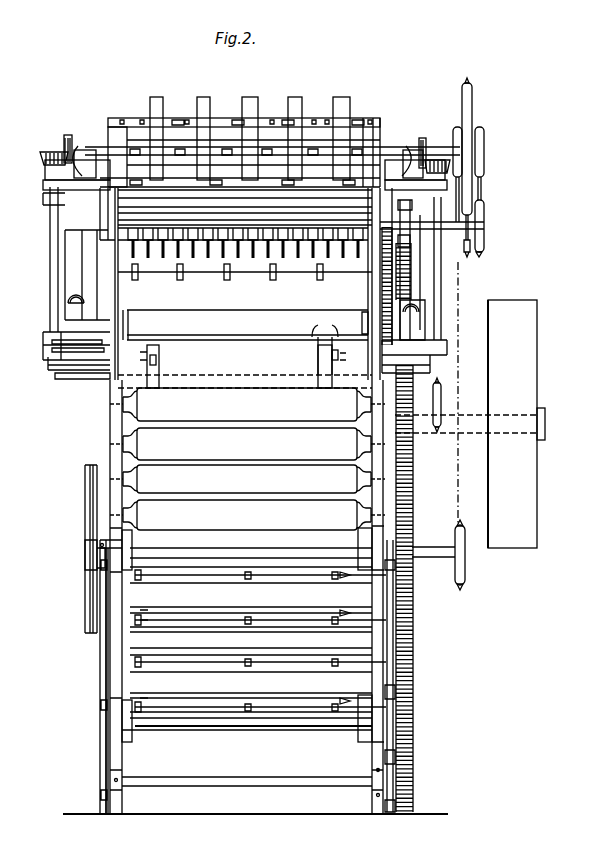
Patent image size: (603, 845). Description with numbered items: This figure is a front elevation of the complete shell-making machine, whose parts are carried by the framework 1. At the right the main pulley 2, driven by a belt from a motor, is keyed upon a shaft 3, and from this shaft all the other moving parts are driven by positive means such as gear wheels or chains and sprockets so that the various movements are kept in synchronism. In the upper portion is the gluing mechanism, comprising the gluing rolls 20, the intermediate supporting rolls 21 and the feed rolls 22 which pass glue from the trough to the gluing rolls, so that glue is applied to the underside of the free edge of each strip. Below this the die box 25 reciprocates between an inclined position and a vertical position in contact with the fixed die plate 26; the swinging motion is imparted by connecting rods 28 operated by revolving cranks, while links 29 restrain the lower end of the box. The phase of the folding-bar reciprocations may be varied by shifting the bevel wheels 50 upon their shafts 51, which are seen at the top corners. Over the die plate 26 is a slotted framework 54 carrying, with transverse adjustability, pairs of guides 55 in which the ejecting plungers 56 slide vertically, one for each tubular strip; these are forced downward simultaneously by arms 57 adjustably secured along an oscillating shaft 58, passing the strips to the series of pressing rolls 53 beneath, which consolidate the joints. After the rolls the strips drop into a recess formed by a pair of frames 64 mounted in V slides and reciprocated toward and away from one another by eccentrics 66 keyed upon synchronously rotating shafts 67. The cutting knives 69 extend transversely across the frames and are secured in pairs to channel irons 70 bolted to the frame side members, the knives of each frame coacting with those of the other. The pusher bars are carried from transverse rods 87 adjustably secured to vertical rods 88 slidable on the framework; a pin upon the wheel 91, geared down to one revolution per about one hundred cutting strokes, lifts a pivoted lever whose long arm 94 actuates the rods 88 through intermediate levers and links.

The framework 1 is at (111, 424).
The main pulley 2 is at (512, 424).
The shaft 3 is at (477, 415).
The gluing rolls 20 is at (170, 258).
The intermediate supporting rolls 21 is at (262, 262).
The feed rolls 22 is at (192, 272).
The die box 25 is at (245, 356).
The die plate 26 is at (307, 262).
The connecting rods 28 is at (66, 304).
The links 29 is at (160, 366).
The bevel wheels 50 is at (44, 158).
The shafts 51 is at (50, 266).
The pressing rolls 53 is at (247, 459).
The slotted framework 54 is at (129, 120).
The guides 55 is at (195, 120).
The ejecting plungers 56 is at (208, 100).
The arms 57 is at (252, 153).
The shaft 58 is at (222, 146).
The frames 64 is at (125, 640).
The eccentrics 66 is at (135, 540).
The shafts 67 is at (200, 545).
The cutting knives 69 is at (214, 662).
The channel irons 70 is at (150, 662).
The transverse rods 87 is at (288, 728).
The vertical rods 88 is at (396, 675).
The wheel 91 is at (92, 512).
The long arm 94 is at (104, 680).